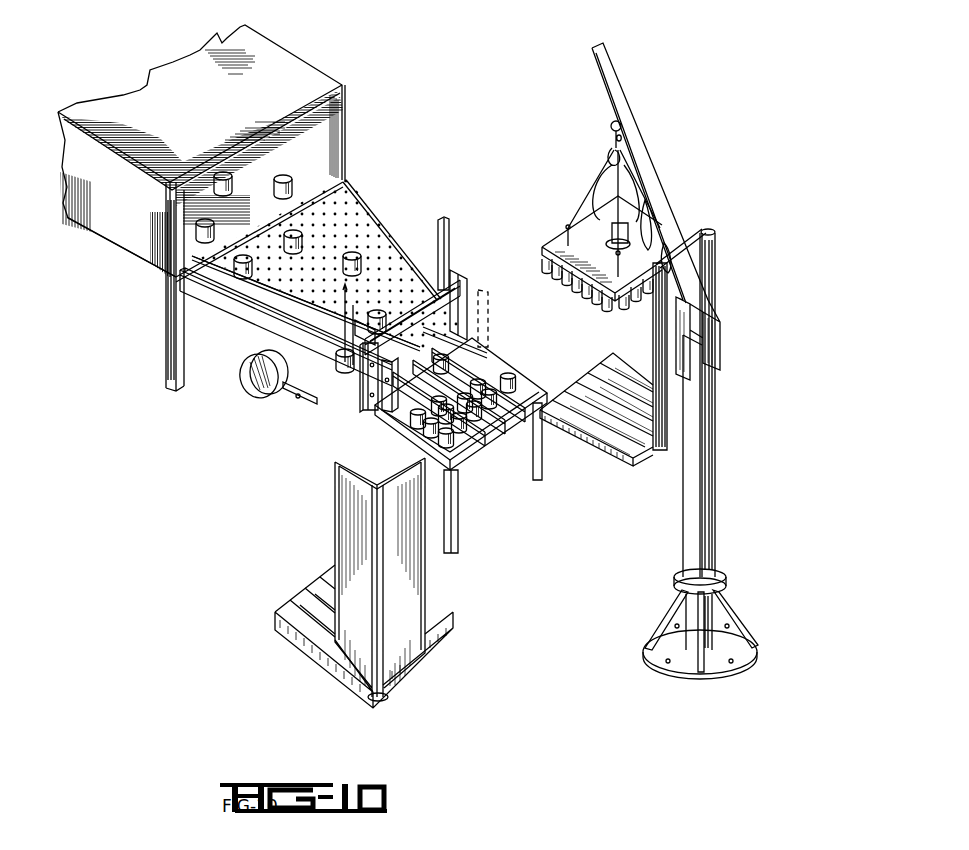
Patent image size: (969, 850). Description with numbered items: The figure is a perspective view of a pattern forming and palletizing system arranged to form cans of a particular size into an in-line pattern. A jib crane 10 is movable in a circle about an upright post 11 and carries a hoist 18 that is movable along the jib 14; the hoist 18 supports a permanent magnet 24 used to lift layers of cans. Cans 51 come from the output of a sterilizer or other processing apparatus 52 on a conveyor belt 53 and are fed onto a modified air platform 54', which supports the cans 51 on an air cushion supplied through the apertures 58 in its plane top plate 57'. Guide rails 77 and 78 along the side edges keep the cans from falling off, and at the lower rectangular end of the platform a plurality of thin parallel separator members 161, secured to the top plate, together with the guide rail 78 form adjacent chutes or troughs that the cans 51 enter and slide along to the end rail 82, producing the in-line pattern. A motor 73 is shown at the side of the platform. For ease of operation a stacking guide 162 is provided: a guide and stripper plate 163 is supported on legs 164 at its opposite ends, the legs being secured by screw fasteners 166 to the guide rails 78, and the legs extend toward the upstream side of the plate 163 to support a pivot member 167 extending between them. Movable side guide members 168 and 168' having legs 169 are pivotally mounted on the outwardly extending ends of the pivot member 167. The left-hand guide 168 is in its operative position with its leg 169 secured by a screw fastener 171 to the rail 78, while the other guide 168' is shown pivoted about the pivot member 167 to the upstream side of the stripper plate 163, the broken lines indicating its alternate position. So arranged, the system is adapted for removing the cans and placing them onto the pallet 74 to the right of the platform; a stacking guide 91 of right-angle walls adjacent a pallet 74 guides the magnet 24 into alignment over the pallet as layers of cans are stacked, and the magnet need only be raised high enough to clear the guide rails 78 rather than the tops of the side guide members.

The jib crane 10 is at (730, 472).
The upright post 11 is at (718, 530).
The jib 14 is at (616, 75).
The electric hoist 18 is at (610, 135).
The permanent magnet 24 is at (538, 238).
The cans 51 is at (352, 258).
The processing apparatus 52 is at (305, 73).
The conveyor belt 53 is at (180, 257).
The modified air platform 54' is at (286, 327).
The support leg 57' is at (158, 286).
The apertures 58 is at (355, 218).
The motor 73 is at (253, 380).
The pallet 74 is at (632, 470).
The guide rail 77 is at (222, 310).
The guide rail 78 is at (515, 374).
The end rail 82 is at (472, 445).
The stacking guide 91 is at (356, 645).
The separator members 161 is at (455, 392).
The stacking guide 162 is at (406, 320).
The guide and stripper plate 163 is at (372, 338).
The legs 164 is at (365, 380).
The screw fasteners 166 is at (370, 405).
The pivot member 167 is at (410, 314).
The side guide member 168 is at (341, 404).
The side guide member 168' is at (482, 290).
The legs 169 is at (449, 228).
The screw fastener 171 is at (393, 408).